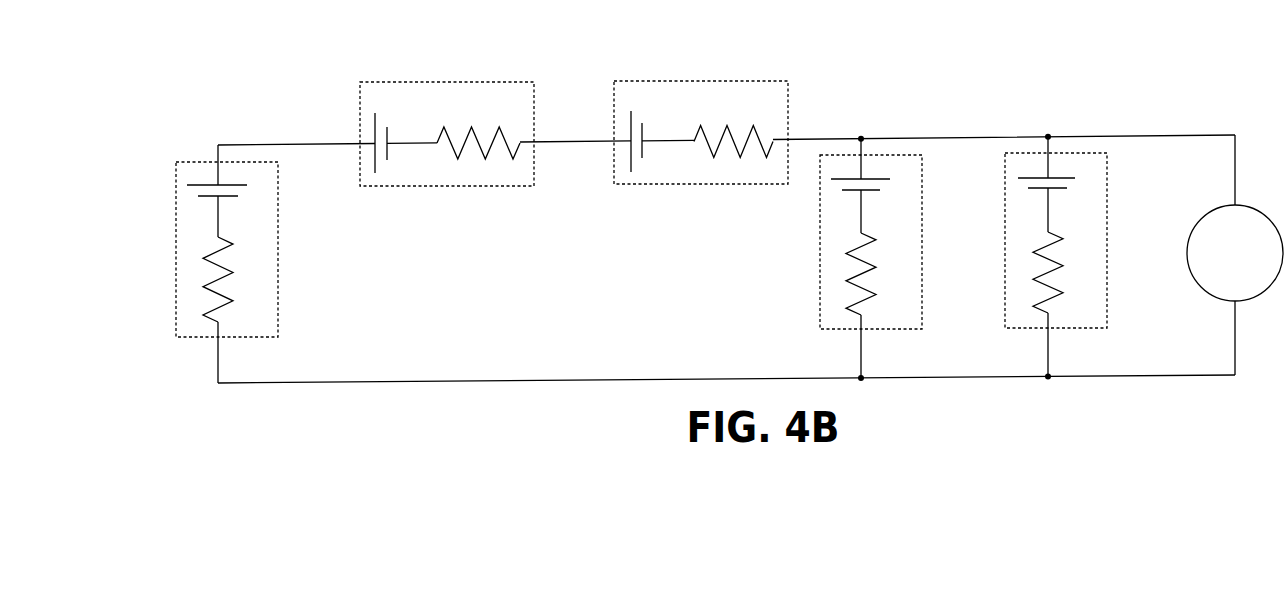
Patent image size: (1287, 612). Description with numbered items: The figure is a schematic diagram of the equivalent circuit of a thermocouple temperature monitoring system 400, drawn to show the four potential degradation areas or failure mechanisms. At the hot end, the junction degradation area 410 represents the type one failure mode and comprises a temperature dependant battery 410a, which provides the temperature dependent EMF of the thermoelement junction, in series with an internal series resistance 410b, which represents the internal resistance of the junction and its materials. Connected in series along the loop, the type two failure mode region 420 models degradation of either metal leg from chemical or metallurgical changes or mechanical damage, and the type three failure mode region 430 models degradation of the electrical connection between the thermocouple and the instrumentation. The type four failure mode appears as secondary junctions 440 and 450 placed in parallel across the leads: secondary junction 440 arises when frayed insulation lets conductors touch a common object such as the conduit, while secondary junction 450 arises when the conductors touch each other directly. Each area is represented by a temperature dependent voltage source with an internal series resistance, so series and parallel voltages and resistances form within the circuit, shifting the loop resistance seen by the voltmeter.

The temperature monitoring system 400 is at (212, 33).
The junction degradation area 410 is at (176, 238).
The temperature dependant battery 410a is at (266, 201).
The internal series resistance 410b is at (268, 264).
The type 2 failure mode region 420 is at (420, 82).
The type 3 failure mode region 430 is at (638, 80).
The secondary junction 440 is at (922, 238).
The secondary junction 450 is at (1107, 238).